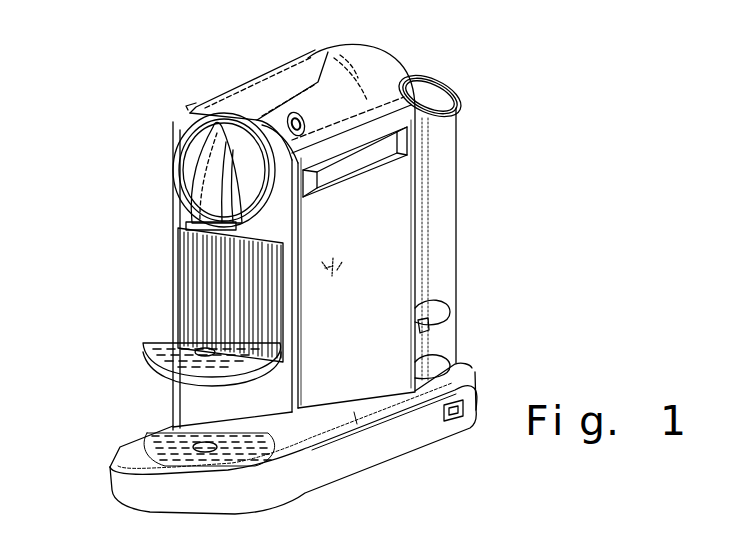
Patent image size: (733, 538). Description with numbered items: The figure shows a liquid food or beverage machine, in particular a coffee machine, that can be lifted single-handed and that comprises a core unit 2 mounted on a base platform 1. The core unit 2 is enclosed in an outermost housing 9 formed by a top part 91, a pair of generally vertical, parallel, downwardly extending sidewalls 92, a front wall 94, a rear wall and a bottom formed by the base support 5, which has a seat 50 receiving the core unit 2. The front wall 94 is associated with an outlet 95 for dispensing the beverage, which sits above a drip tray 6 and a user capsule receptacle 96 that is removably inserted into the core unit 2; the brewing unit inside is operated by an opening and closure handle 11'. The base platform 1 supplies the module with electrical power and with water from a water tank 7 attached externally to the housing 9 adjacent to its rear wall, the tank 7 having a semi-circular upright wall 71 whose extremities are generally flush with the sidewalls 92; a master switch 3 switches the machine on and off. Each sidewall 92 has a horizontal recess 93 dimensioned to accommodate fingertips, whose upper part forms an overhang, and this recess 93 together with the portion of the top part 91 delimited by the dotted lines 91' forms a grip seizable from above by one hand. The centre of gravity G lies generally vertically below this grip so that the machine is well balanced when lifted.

The base platform 1 is at (122, 446).
The core unit 2 is at (176, 114).
The master switch 3 is at (461, 411).
The base support 5 is at (296, 456).
The drip tray 6 is at (152, 430).
The water tank 7 is at (464, 192).
The housing 9 is at (172, 209).
The opening and closure handle 11' is at (250, 85).
The seat 50 is at (354, 416).
The semi-circular upright wall 71 is at (444, 136).
The top part 91 is at (348, 203).
The dotted lines 91' is at (259, 75).
The sidewalls 92 is at (134, 253).
The recess 93 is at (332, 173).
The front wall 94 is at (263, 226).
The outlet 95 is at (200, 175).
The user capsule receptacle 96 is at (282, 304).
The centre of gravity G is at (345, 260).